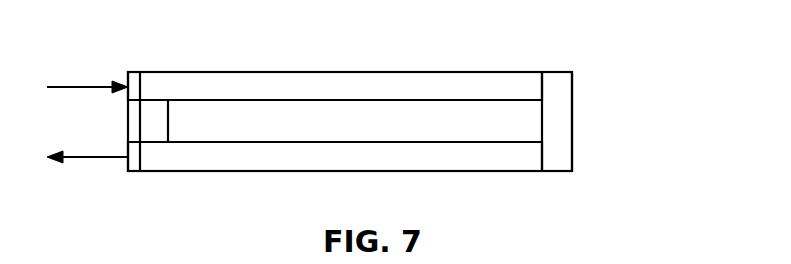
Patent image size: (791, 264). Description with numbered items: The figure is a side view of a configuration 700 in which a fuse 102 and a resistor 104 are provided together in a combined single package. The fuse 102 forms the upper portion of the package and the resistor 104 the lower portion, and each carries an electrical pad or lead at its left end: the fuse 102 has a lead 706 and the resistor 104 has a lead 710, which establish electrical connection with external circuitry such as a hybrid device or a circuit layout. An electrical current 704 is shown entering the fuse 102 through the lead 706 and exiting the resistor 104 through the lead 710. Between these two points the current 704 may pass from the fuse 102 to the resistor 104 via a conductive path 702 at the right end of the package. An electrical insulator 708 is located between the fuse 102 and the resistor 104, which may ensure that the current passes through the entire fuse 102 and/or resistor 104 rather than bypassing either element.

The configuration 700 is at (616, 46).
The fuse 102 is at (228, 72).
The resistor 104 is at (200, 172).
The conductive path 702 is at (572, 112).
The electrical current 704 is at (87, 122).
The electrical pad/lead 706 is at (131, 72).
The electrical insulator 708 is at (140, 118).
The electrical pad/lead 710 is at (132, 172).